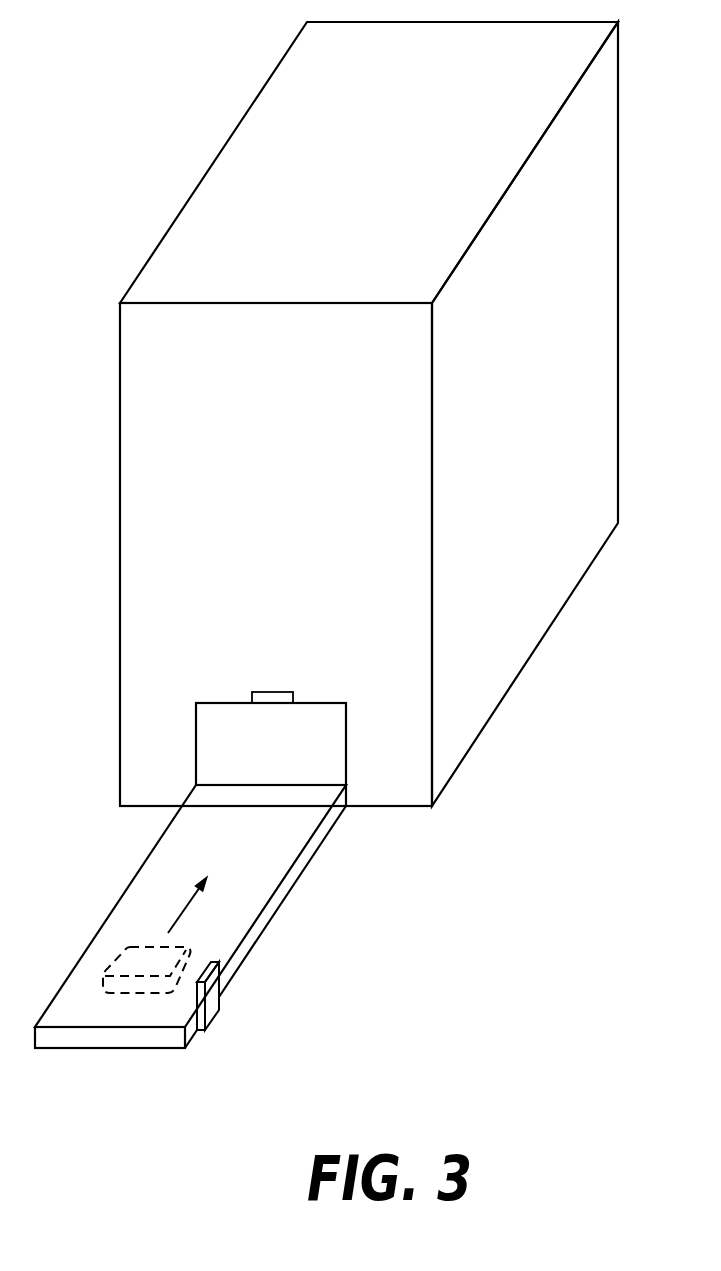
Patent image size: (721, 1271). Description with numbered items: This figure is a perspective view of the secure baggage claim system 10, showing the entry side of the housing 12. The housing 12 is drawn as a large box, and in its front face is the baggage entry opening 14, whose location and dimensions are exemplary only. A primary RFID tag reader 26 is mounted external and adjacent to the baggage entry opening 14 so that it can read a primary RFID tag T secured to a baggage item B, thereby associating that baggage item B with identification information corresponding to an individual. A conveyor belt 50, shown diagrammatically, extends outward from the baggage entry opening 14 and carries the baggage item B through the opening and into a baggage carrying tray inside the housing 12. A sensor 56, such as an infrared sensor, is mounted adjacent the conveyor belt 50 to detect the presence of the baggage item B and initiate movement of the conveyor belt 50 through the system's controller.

The secure baggage claim system 10 is at (355, 414).
The housing 12 is at (507, 192).
The baggage entry opening 14 is at (294, 688).
The primary RFID tag reader 26 is at (274, 692).
The conveyor belt 50 is at (190, 949).
The sensor 56 is at (213, 1005).
The primary RFID tag T is at (130, 947).
The baggage item B is at (155, 987).